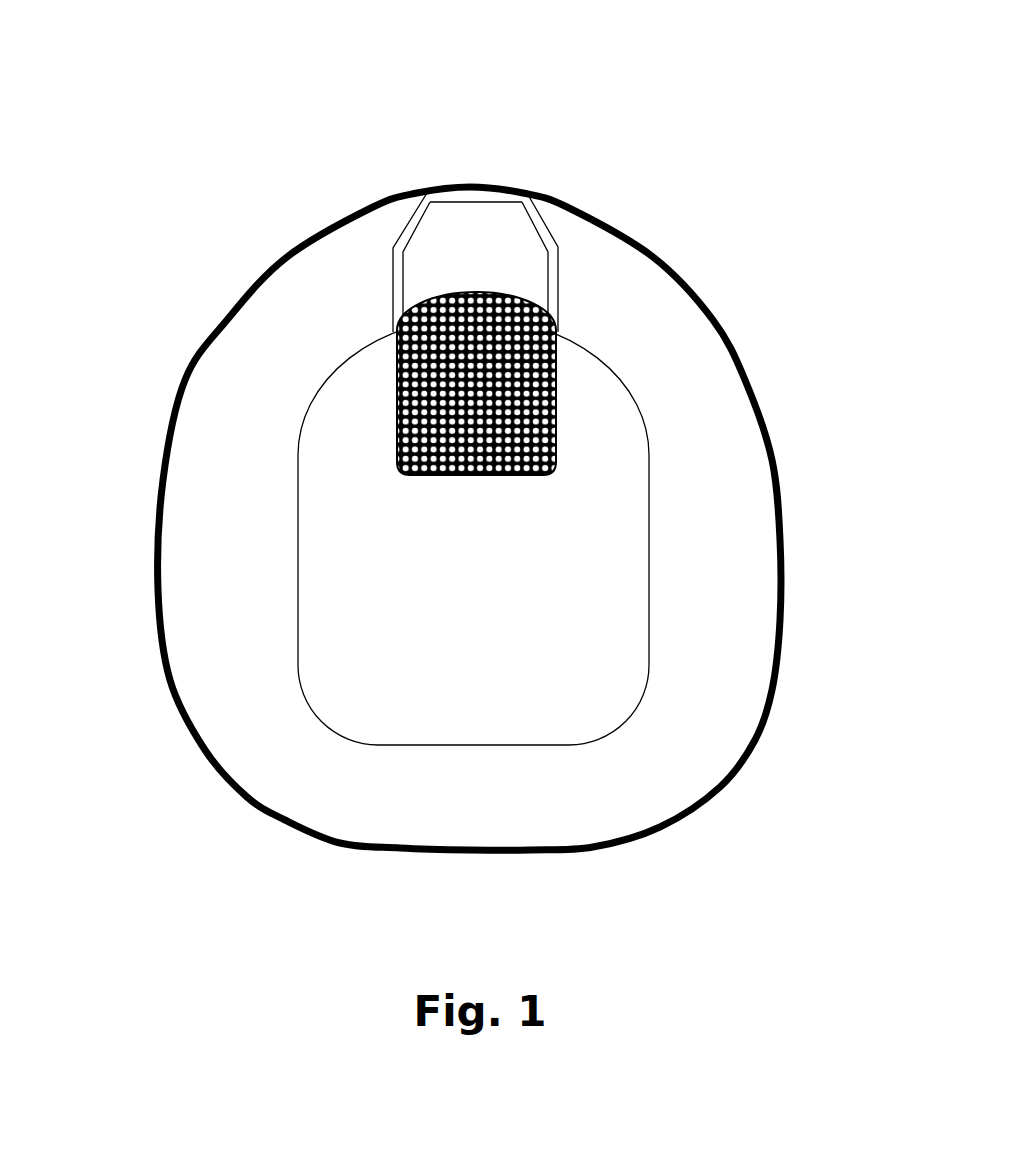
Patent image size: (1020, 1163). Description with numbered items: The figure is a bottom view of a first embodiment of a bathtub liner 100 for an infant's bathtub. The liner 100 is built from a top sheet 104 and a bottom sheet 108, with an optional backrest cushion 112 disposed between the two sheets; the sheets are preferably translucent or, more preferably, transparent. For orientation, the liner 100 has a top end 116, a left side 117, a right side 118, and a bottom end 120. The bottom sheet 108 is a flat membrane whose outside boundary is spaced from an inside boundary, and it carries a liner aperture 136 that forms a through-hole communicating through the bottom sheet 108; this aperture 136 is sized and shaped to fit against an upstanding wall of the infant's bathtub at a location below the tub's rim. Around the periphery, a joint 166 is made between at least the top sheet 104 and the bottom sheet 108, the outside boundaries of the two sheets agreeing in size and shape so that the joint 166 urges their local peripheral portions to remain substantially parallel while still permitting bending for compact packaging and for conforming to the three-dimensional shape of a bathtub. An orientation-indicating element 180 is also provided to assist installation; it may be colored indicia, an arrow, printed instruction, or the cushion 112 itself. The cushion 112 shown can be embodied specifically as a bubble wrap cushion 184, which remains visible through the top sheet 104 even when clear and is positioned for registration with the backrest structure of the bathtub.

The bathtub liner 100 is at (255, 216).
The top sheet 104 is at (340, 492).
The bottom sheet 108 is at (246, 737).
The backrest cushion 112 is at (465, 490).
The top end 116 is at (468, 152).
The left side 117 is at (803, 377).
The right side 118 is at (125, 597).
The bottom end 120 is at (646, 866).
The liner aperture 136 is at (376, 618).
The joint 166 is at (317, 840).
The orientation-indicating element 180 is at (652, 180).
The bubble wrap cushion 184 is at (402, 360).